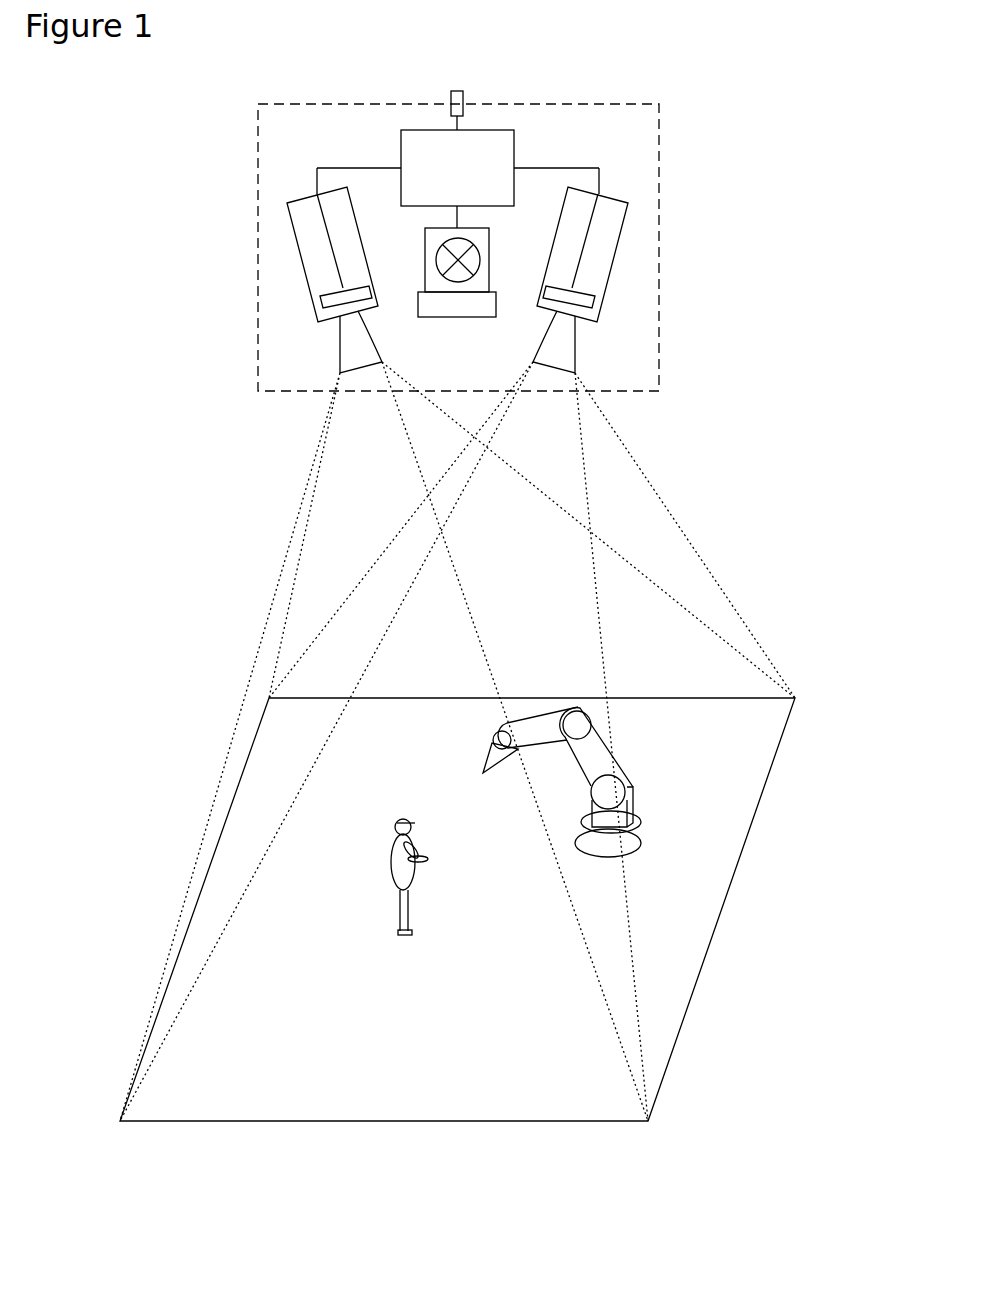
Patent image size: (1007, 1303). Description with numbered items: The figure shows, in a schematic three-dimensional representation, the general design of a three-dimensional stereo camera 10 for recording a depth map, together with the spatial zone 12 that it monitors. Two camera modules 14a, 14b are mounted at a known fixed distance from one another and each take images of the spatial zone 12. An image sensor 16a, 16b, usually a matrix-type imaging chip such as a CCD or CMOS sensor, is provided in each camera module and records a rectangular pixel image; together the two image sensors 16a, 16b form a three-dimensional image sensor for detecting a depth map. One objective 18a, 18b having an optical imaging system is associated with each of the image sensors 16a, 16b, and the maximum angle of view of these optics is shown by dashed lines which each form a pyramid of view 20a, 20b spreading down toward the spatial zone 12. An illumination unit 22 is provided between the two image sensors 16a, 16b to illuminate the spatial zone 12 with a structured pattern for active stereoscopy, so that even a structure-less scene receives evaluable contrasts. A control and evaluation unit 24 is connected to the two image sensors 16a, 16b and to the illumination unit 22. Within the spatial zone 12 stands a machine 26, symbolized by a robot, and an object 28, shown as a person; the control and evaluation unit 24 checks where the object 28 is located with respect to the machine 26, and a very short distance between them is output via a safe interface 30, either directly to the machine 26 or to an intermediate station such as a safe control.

The 3D stereo camera 10 is at (658, 122).
The spatial zone 12 is at (763, 550).
The camera module 14a is at (308, 260).
The camera module 14b is at (623, 230).
The image sensor 16a is at (323, 307).
The image sensor 16b is at (598, 302).
The objective 18a is at (347, 347).
The objective 18b is at (580, 370).
The pyramid of view 20a is at (285, 558).
The pyramid of view 20b is at (685, 533).
The illumination unit 22 is at (510, 280).
The control and evaluation unit 24 is at (413, 140).
The machine 26 is at (633, 843).
The object 28 is at (398, 922).
The safe interface 30 is at (463, 92).